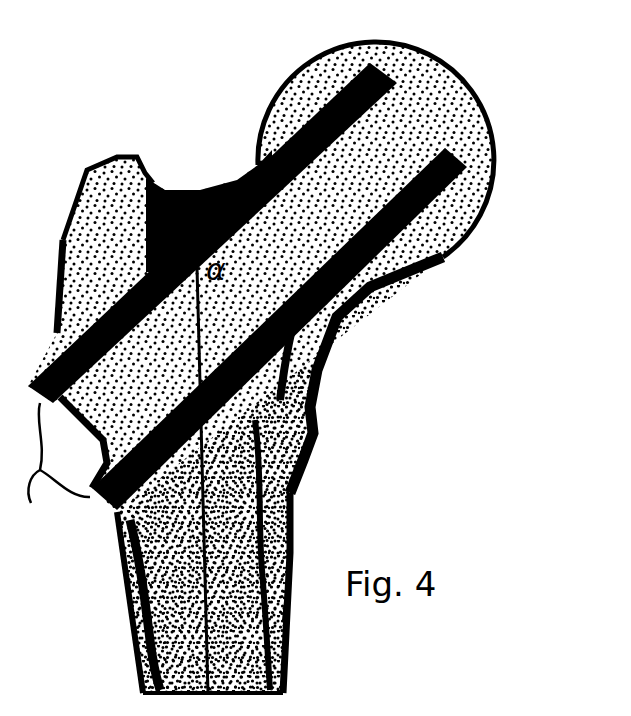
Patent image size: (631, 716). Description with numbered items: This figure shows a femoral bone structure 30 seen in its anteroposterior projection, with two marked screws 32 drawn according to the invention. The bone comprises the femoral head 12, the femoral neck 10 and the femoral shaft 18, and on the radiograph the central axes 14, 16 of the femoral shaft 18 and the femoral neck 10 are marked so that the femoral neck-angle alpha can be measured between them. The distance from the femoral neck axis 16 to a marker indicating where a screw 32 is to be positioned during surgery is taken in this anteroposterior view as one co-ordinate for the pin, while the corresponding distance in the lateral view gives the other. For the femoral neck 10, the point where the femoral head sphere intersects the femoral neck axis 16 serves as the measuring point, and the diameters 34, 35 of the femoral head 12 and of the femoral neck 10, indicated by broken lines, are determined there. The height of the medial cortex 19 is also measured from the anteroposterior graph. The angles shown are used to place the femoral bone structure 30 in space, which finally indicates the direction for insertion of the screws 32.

The femoral neck 10 is at (336, 323).
The femoral head 12 is at (490, 136).
The central axis of the femoral shaft 14 is at (128, 567).
The femoral neck axis 16 is at (422, 107).
The femoral shaft 18 is at (283, 537).
The medial cortex 19 is at (313, 403).
The femoral bone structure 30 is at (583, 359).
The screw 32 is at (57, 473).
The diameter of the femoral head 34 is at (478, 222).
The diameter of the femoral neck 35 is at (191, 188).